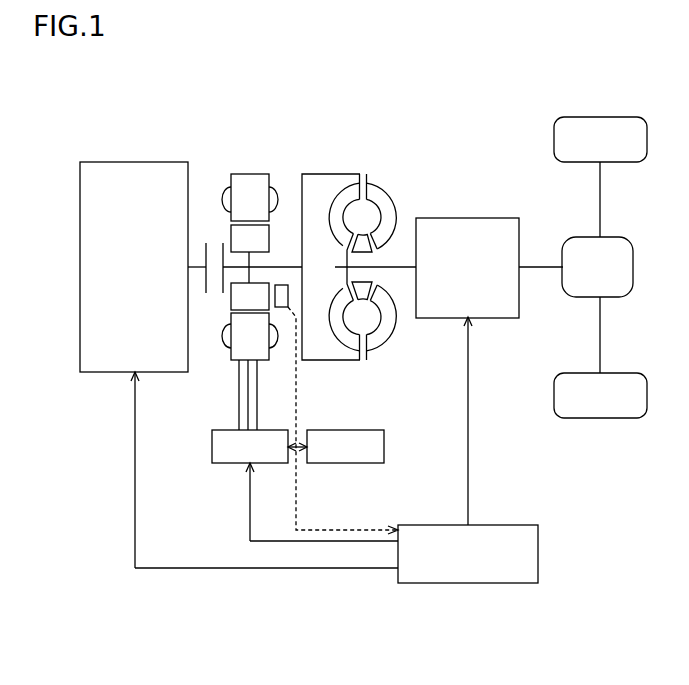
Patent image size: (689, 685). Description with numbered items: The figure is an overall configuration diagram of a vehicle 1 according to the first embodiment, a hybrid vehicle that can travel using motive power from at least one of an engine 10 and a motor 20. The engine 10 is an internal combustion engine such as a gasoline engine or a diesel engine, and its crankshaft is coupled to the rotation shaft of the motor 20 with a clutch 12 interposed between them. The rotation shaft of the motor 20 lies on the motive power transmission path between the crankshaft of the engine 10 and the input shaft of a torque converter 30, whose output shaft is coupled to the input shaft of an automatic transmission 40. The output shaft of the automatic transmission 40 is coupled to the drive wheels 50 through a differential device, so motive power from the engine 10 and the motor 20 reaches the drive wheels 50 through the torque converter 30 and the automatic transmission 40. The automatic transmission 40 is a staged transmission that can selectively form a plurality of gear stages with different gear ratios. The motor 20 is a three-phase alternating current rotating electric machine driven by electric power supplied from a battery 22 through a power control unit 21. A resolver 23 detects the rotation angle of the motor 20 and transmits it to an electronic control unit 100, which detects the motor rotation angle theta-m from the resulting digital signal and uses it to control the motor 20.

The vehicle 1 is at (357, 45).
The engine 10 is at (136, 161).
The clutch 12 is at (213, 253).
The motor 20 is at (249, 162).
The power control unit (PCU) 21 is at (225, 430).
The battery 22 is at (352, 430).
The resolver 23 is at (281, 285).
The torque converter 30 is at (346, 160).
The automatic transmission 40 is at (470, 216).
The drive wheels 50 is at (602, 116).
The electronic control unit (ECU) 100 is at (502, 524).